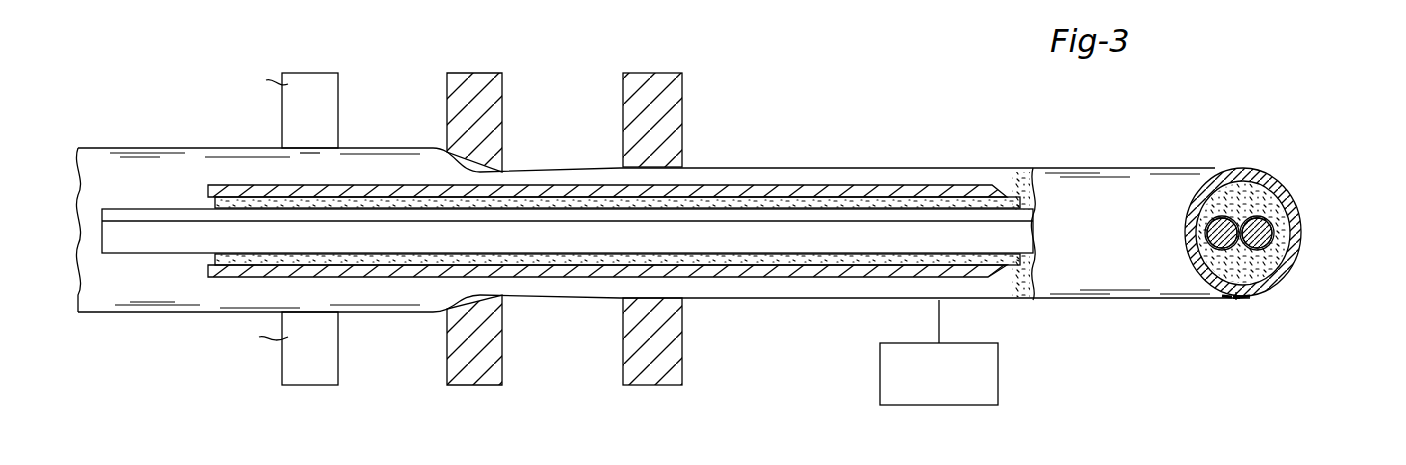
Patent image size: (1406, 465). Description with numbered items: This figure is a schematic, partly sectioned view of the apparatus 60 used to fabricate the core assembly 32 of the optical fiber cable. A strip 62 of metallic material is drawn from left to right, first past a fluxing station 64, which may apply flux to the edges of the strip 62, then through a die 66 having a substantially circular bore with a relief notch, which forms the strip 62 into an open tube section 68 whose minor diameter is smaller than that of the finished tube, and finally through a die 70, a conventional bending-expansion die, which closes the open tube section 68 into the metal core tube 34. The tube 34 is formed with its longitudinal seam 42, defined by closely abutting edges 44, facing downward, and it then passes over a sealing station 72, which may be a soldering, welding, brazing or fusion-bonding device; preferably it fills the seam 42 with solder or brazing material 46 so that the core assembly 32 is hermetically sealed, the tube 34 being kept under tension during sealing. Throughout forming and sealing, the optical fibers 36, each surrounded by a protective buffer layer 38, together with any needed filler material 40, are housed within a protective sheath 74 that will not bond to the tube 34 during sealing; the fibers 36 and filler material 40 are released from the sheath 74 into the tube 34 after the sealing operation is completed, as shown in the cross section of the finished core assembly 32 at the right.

The core assembly 32 is at (1180, 147).
The metal core tube 34 is at (1253, 182).
The optical fiber 36 is at (1262, 225).
The protective buffer layer 38 is at (1297, 232).
The filler material 40 is at (1270, 184).
The longitudinal seam 42 is at (1233, 303).
The abutting edges 44 is at (1262, 295).
The solder or brazing material 46 is at (1239, 300).
The apparatus 60 is at (872, 66).
The strip 62 is at (140, 165).
The fluxing station 64 is at (316, 105).
The die 66 is at (503, 93).
The open tube section 68 is at (566, 298).
The die 70 is at (673, 82).
The sealing station 72 is at (994, 385).
The protective sheath 74 is at (940, 193).